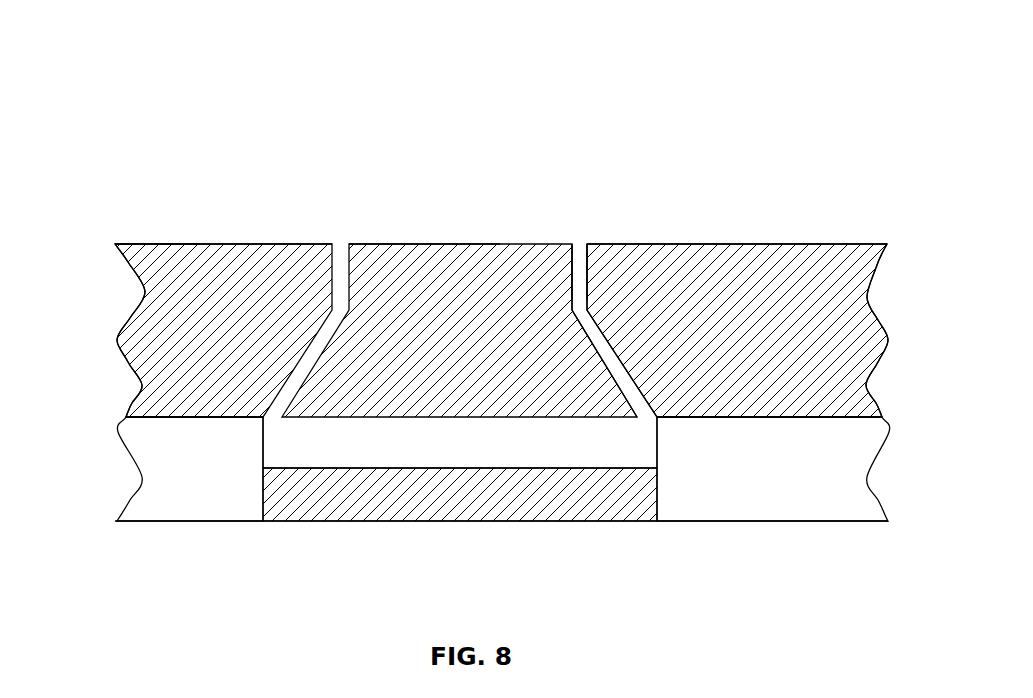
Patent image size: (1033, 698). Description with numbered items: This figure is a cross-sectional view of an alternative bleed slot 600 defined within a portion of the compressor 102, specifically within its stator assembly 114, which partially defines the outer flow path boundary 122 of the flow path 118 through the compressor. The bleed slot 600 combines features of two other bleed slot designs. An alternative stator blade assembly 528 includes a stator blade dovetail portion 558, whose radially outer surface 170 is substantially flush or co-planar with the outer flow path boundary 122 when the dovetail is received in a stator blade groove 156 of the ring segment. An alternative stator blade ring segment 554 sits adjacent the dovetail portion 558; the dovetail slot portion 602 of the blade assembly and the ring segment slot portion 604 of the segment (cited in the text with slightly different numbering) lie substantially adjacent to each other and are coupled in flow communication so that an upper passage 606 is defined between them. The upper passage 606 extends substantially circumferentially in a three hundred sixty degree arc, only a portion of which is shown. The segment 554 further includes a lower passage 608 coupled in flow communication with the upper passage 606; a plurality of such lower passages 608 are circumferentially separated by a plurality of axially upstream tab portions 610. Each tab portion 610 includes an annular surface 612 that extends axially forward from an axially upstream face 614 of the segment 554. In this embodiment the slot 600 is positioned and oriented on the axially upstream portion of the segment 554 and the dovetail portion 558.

The compressor 102 is at (130, 42).
The stator assembly 114 is at (160, 112).
The bleed slot 600 is at (203, 179).
The stator blade ring segment 554 is at (241, 238).
The outer flow path boundary 122 is at (178, 244).
The stator blade assembly 528 is at (386, 235).
The radially outer surface 170 is at (442, 223).
The stator blade dovetail portion 558 is at (534, 264).
The flow path 118 is at (598, 201).
The upper passage 606 is at (625, 230).
The axially upstream face 614 is at (165, 301).
The annular surface 612 is at (152, 410).
The dielectric layer 604 is at (238, 342).
The conductive plug 602 is at (477, 340).
The stator blade groove 156 is at (380, 458).
The lower passage 608 is at (488, 508).
The axially upstream tab portion 610 is at (213, 483).